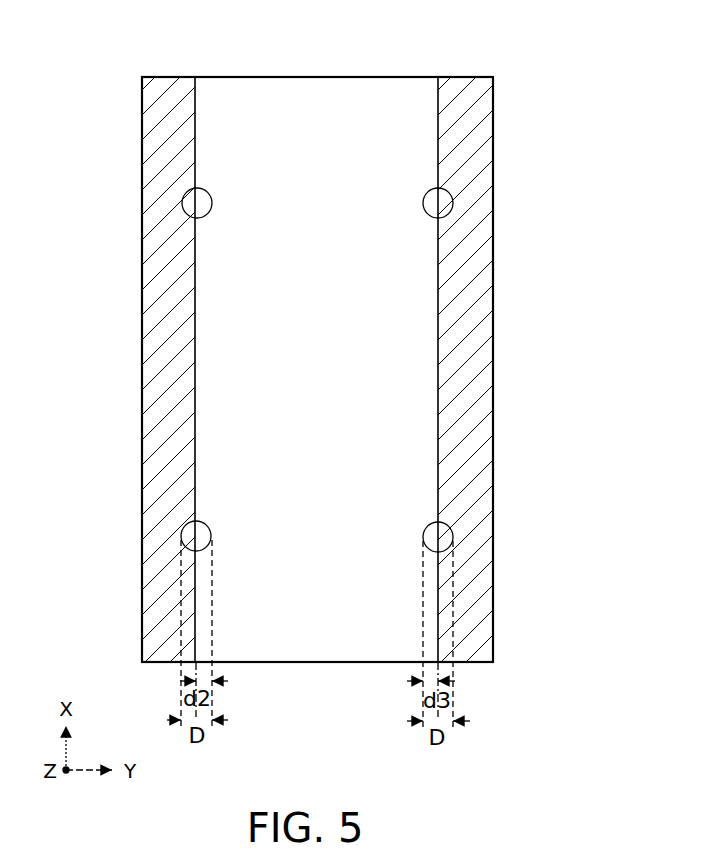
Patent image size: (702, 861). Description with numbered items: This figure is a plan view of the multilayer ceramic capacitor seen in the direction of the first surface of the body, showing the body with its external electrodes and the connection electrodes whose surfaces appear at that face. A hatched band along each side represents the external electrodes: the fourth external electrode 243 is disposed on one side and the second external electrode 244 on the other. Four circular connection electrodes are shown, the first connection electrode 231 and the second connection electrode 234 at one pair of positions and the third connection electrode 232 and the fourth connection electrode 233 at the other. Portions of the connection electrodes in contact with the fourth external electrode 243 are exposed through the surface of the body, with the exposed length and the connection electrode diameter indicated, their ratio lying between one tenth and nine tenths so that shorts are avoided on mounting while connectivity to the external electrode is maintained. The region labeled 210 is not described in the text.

The plate body 210 is at (322, 90).
The fourth external electrode 243 is at (462, 85).
The second external electrode 244 is at (168, 84).
The first connection electrode 231 is at (203, 205).
The third connection electrode 232 is at (434, 205).
The fourth connection electrode 233 is at (434, 538).
The second connection electrode 234 is at (203, 538).